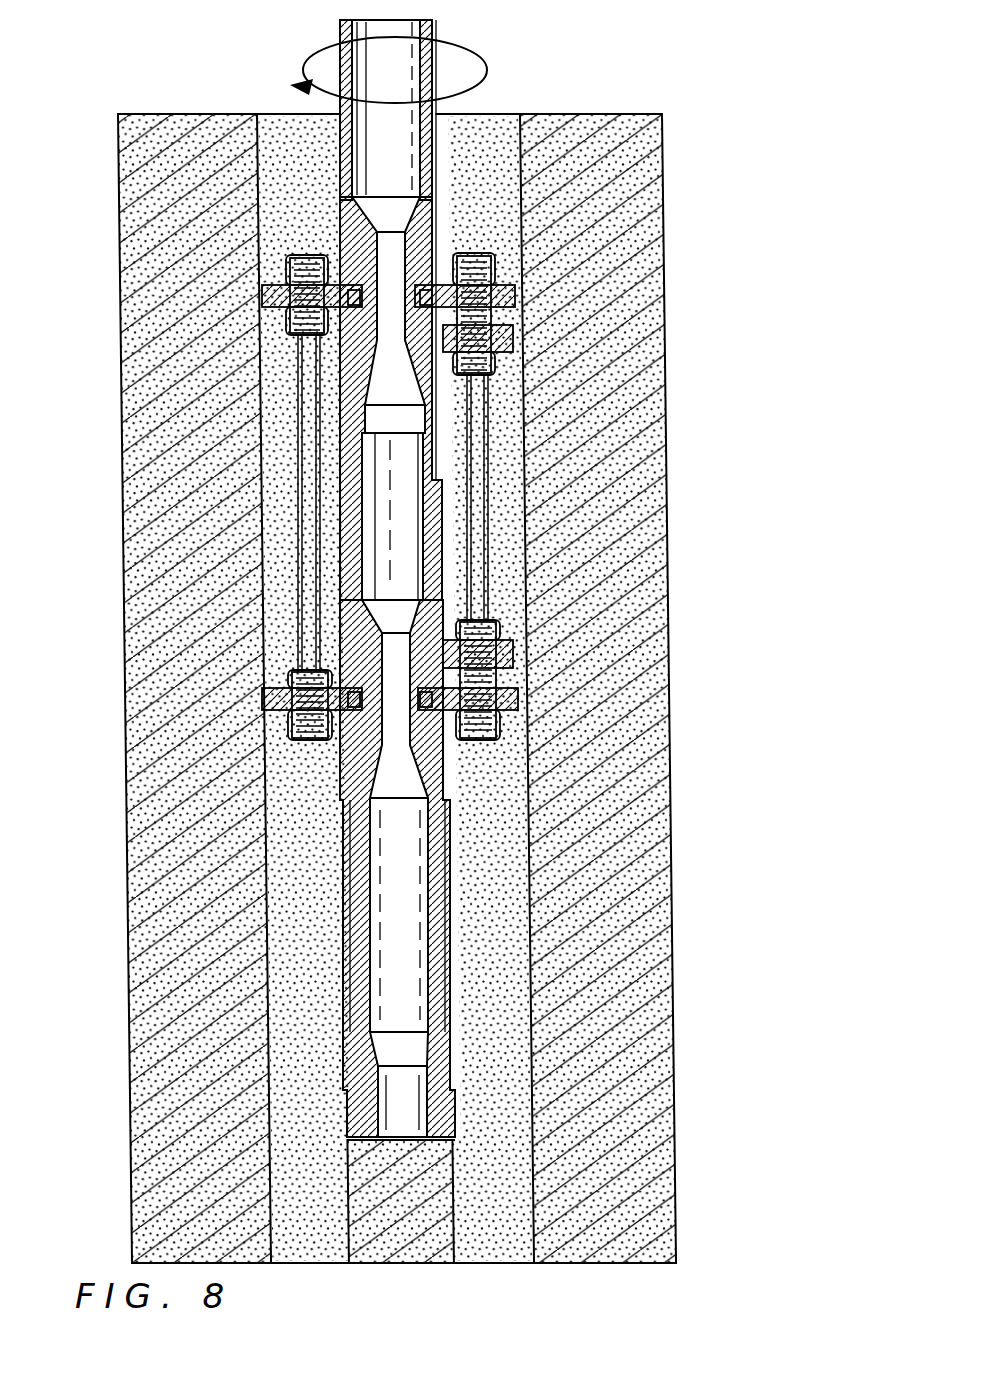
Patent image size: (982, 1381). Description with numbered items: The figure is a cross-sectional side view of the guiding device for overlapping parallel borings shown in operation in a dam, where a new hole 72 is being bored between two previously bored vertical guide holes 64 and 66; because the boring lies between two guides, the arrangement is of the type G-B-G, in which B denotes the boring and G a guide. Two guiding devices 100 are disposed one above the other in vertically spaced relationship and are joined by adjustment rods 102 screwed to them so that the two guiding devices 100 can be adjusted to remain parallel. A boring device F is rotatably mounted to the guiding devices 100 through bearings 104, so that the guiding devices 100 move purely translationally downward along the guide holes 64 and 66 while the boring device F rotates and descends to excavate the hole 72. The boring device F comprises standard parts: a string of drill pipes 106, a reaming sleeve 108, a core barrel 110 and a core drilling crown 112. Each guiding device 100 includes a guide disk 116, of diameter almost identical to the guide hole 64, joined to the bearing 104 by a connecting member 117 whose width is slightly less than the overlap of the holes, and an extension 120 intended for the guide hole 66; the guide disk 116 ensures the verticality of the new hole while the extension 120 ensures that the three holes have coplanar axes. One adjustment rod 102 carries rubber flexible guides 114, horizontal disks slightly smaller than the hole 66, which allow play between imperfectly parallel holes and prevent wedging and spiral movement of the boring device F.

The boring B is at (204, 110).
The guide hole 64 is at (322, 1230).
The guide hole 66 is at (498, 1232).
The hole 72 is at (438, 134).
The guiding device 100 is at (447, 280).
The adjustment rods 102 is at (305, 605).
The bearings 104 is at (350, 318).
The string of drill pipes 106 is at (437, 20).
The reaming sleeve 108 is at (445, 493).
The core barrel 110 is at (445, 953).
The core drilling crown 112 is at (452, 1118).
The flexible guides 114 is at (518, 343).
The guide disk 116 is at (262, 297).
The connecting member 117 is at (350, 318).
The extension 120 is at (445, 298).
The boring device F is at (384, 505).